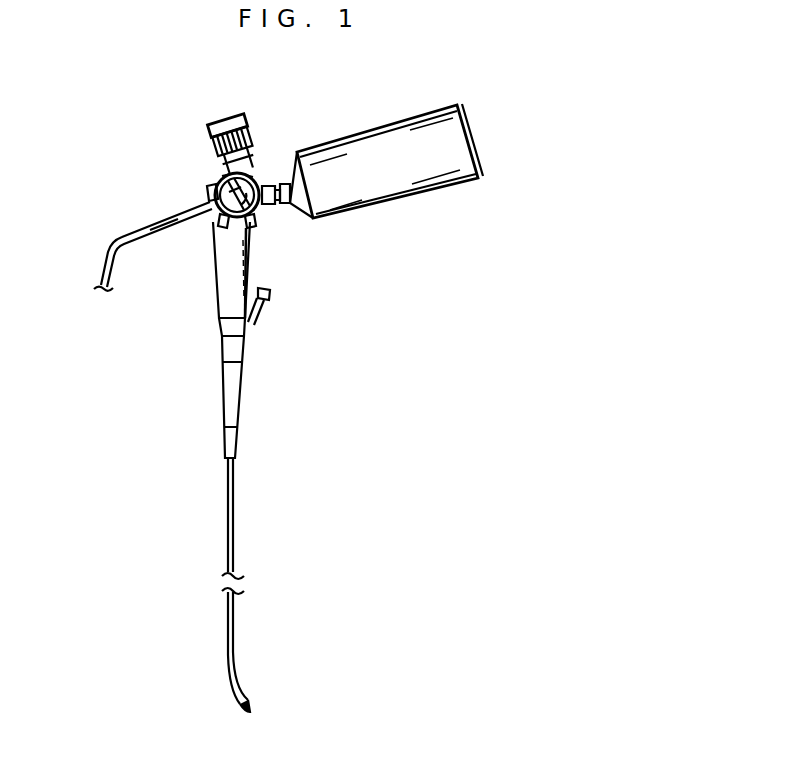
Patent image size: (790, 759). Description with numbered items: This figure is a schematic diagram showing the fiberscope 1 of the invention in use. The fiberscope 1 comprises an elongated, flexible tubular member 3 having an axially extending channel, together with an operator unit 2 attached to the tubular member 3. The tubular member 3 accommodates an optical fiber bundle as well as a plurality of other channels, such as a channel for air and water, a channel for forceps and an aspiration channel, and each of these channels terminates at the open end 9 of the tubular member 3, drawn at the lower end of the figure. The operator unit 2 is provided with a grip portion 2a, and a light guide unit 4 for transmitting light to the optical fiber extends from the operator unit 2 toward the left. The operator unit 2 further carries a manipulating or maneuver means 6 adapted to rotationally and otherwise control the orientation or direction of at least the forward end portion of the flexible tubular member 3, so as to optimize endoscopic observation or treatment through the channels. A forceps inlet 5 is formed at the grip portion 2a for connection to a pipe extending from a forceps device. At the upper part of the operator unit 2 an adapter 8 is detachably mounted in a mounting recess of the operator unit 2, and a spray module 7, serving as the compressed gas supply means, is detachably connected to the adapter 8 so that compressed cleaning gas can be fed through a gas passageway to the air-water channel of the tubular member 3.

The fiberscope 1 is at (187, 158).
The operator unit 2 is at (207, 256).
The grip portion 2a is at (254, 252).
The elongated tubular member 3 is at (228, 518).
The light guide unit 4 is at (110, 245).
The forceps inlet 5 is at (258, 313).
The maneuver means 6 is at (258, 220).
The spray module 7 is at (364, 152).
The adapter 8 is at (266, 172).
The open end 9 is at (252, 708).